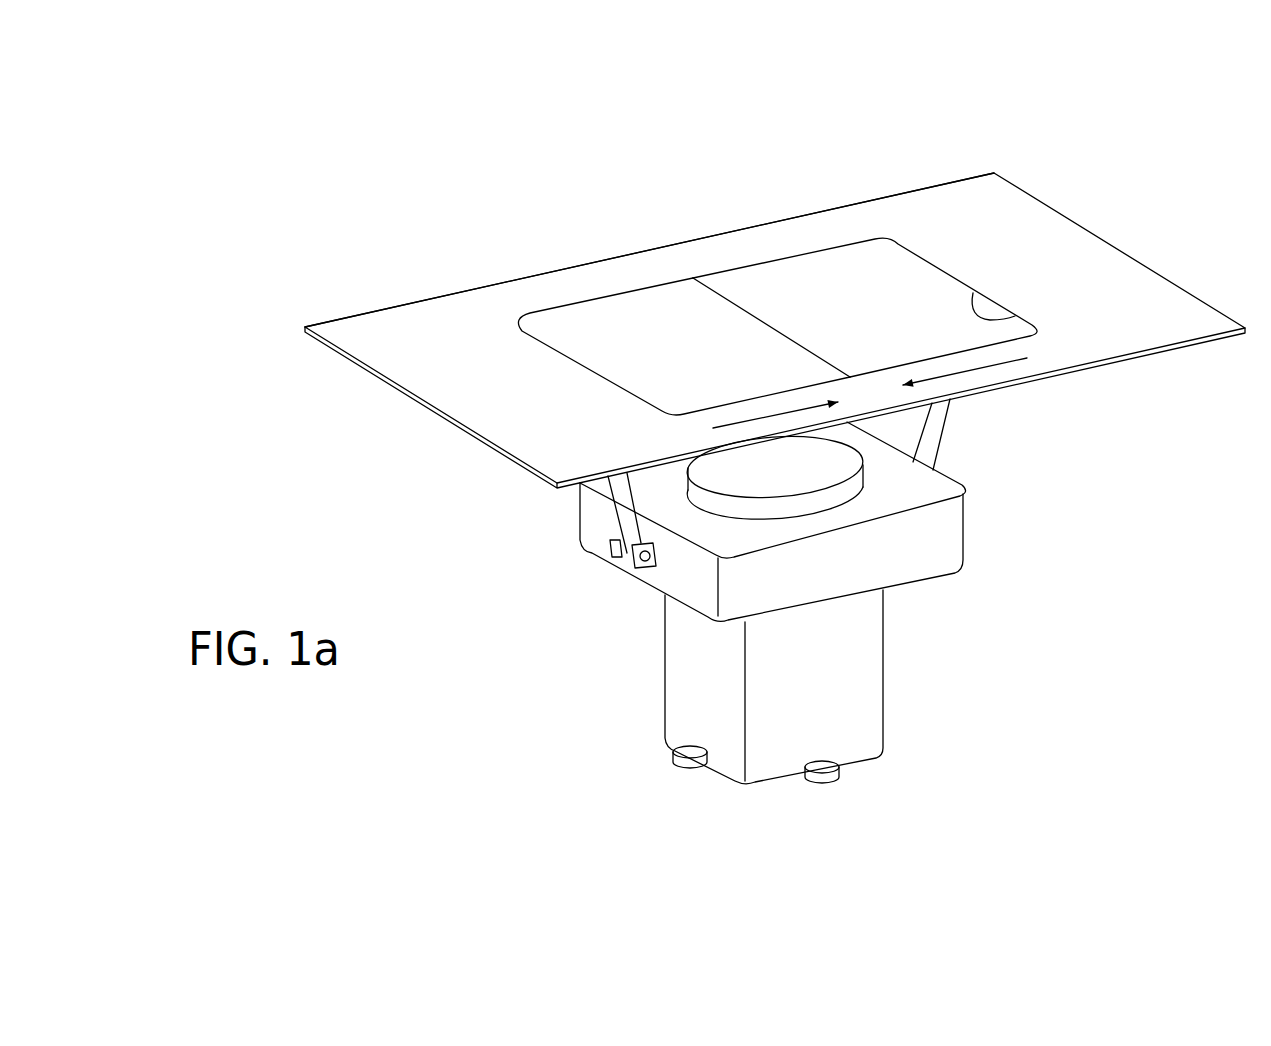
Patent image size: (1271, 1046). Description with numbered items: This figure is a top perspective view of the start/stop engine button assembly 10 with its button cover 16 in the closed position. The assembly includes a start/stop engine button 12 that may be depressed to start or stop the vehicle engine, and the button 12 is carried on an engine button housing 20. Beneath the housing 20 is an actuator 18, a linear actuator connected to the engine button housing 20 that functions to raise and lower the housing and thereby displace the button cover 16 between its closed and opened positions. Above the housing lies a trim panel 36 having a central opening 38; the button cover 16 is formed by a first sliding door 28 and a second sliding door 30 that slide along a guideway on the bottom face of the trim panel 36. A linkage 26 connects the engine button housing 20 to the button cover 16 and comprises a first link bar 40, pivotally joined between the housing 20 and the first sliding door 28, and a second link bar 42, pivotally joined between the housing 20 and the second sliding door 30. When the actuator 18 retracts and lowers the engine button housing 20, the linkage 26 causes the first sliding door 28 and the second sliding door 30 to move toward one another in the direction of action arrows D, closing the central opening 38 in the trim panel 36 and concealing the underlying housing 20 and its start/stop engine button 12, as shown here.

The start/stop engine button assembly 10 is at (1108, 176).
The start/stop engine button 12 is at (823, 477).
The button cover 16 is at (662, 273).
The actuator 18 is at (610, 730).
The engine button housing 20 is at (932, 560).
The linkage 26 is at (578, 562).
The first sliding door 28 is at (687, 357).
The second sliding door 30 is at (858, 318).
The trim panel 36 is at (945, 183).
The central opening 38 is at (1015, 316).
The first link bar 40 is at (585, 518).
The second link bar 42 is at (935, 434).
The action arrows D is at (933, 377).